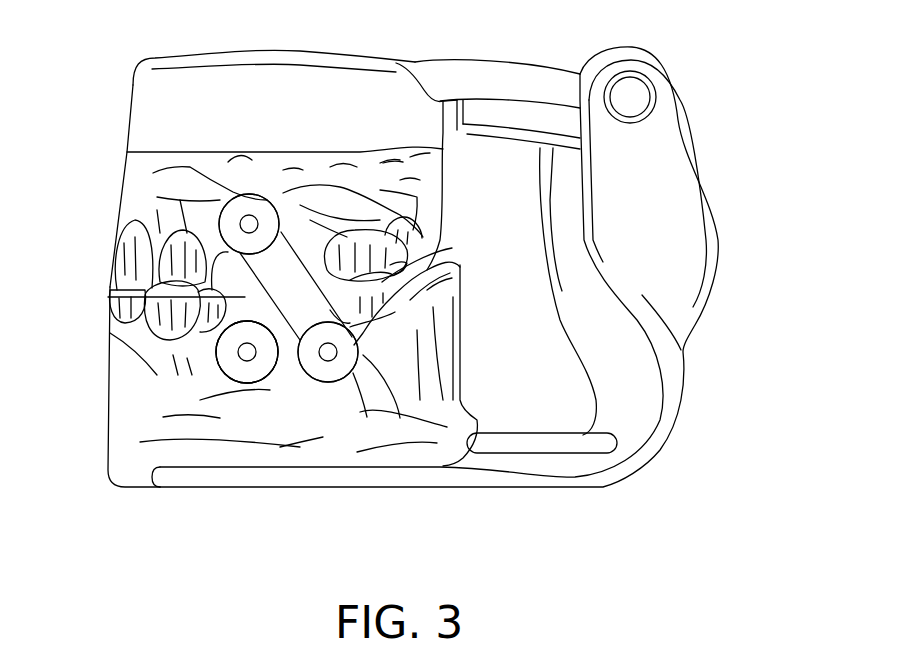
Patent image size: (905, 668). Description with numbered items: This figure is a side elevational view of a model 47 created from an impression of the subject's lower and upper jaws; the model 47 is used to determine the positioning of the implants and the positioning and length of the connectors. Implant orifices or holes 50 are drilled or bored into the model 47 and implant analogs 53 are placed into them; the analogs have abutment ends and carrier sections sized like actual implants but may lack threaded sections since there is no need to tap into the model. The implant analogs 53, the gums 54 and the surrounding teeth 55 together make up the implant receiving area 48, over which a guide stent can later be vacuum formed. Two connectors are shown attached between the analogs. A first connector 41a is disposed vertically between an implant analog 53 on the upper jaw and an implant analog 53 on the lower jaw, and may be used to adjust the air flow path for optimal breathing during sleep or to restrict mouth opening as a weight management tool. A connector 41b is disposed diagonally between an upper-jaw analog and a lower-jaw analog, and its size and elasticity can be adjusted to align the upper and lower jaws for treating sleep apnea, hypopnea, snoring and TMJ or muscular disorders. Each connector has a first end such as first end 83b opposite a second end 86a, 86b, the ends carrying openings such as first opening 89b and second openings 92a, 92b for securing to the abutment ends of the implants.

The model 47 is at (733, 63).
The connector 41b is at (327, 218).
The connector 41a is at (110, 296).
The surrounding teeth 55 is at (122, 233).
The gums 54 is at (185, 197).
The implant orifices or holes 50 is at (233, 198).
The implant analogs 53 is at (290, 240).
The first end 83b is at (262, 216).
The first opening 89b is at (248, 198).
The second opening 92a is at (252, 380).
The second opening 92b is at (343, 345).
The implant receiving area 48 is at (278, 395).
The second end 86a is at (165, 382).
The second end 86b is at (390, 390).